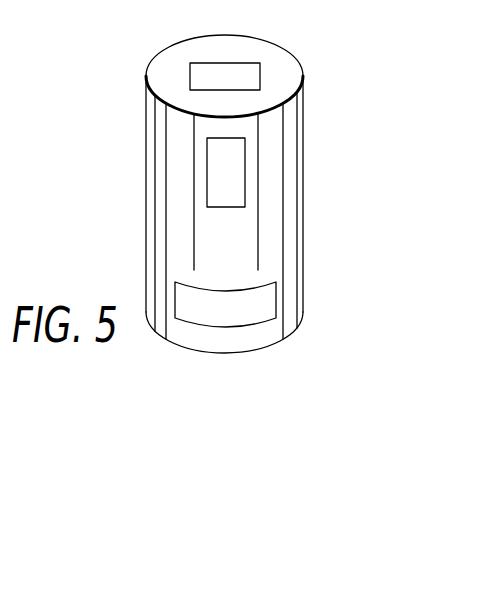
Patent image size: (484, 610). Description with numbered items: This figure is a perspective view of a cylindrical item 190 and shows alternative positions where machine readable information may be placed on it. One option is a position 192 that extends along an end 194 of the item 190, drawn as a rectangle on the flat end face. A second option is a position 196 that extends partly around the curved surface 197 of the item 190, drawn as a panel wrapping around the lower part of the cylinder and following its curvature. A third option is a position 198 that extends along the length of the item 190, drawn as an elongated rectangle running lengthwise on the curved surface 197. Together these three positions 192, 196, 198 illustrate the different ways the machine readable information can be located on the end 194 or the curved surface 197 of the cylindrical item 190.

The cylindrical item 190 is at (227, 202).
The position 192 is at (263, 70).
The end 194 is at (170, 78).
The position 196 is at (260, 323).
The curved surface 197 is at (146, 241).
The position 198 is at (245, 184).